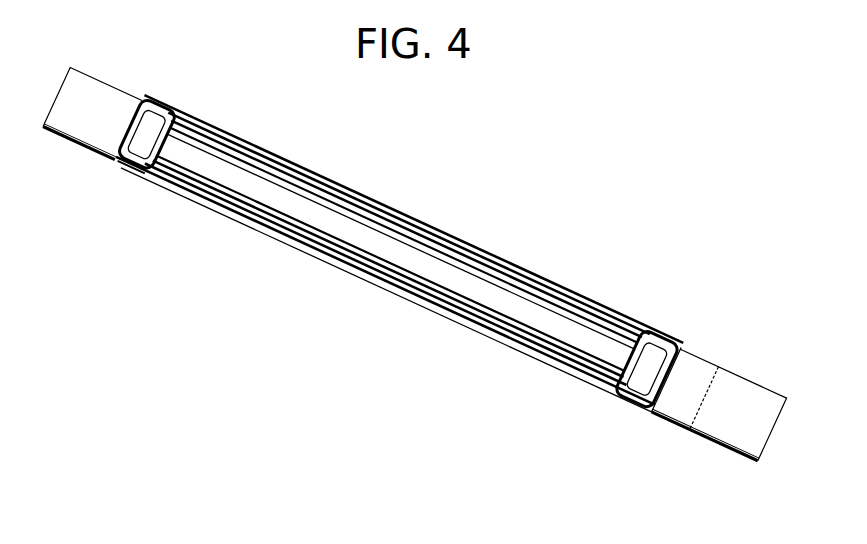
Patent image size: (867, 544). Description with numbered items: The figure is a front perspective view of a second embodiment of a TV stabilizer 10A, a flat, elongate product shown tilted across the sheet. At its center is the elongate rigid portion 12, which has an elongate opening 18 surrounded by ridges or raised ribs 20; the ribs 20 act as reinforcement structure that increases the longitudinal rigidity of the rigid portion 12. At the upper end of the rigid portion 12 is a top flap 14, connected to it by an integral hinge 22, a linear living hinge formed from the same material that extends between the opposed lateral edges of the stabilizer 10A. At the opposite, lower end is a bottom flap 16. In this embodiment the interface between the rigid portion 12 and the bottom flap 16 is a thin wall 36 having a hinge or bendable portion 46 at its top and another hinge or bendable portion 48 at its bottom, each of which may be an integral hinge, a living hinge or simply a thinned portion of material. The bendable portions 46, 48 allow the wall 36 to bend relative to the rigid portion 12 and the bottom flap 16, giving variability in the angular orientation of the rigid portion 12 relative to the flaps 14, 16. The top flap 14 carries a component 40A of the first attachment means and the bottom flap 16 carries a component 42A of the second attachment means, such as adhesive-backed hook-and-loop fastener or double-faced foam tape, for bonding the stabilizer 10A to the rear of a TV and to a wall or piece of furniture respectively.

The TV stabilizer 10A is at (503, 236).
The rigid portion 12 is at (208, 205).
The top flap 14 is at (77, 143).
The bottom flap 16 is at (702, 437).
The elongate opening 18 is at (218, 168).
The raised ribs 20 is at (270, 165).
The integral hinge 22 is at (120, 158).
The thin wall 36 is at (681, 350).
The first attachment means component 40A is at (103, 116).
The second attachment means component 42A is at (739, 398).
The bendable portion 46 is at (650, 408).
The bendable portion 48 is at (687, 428).